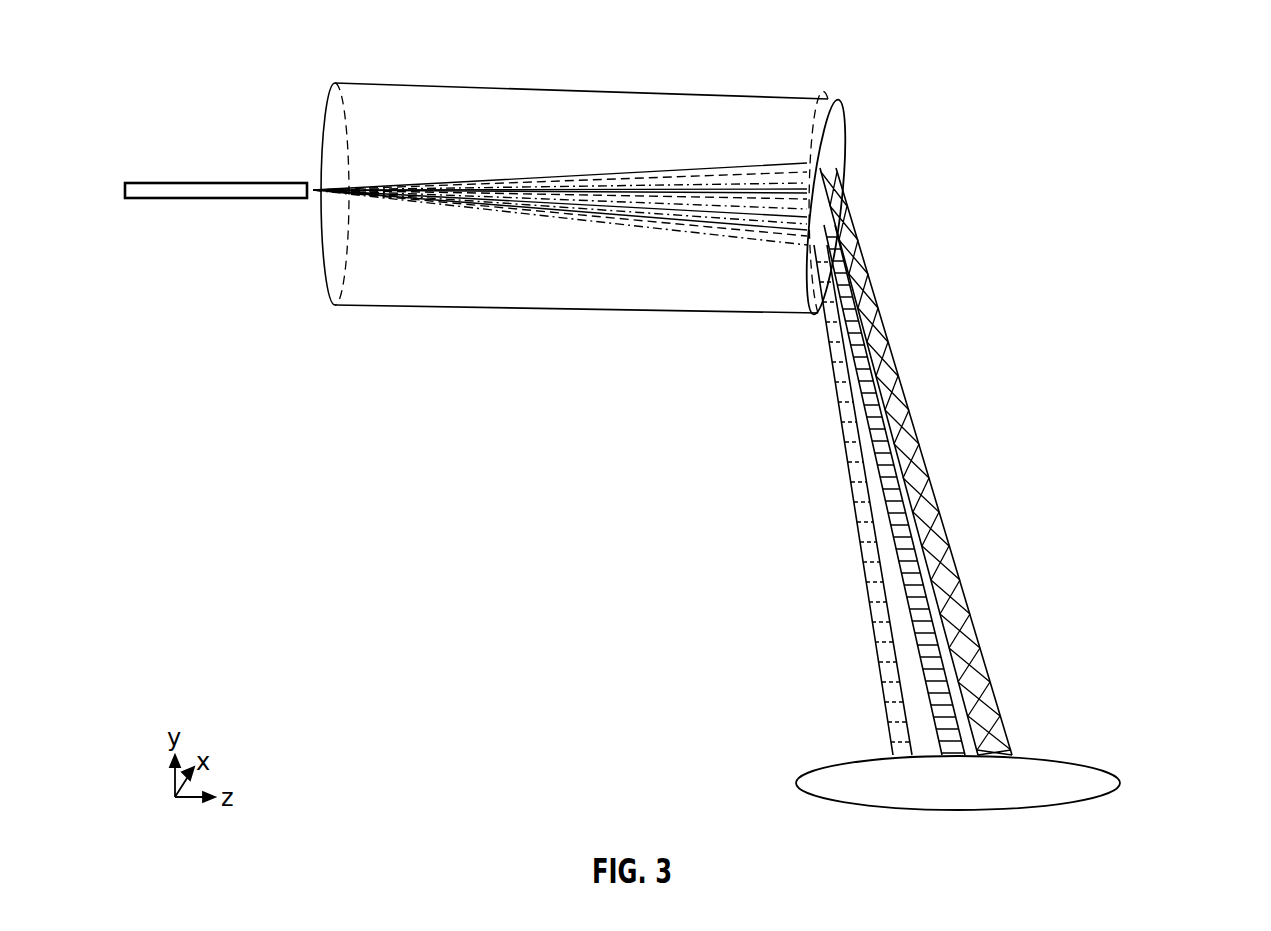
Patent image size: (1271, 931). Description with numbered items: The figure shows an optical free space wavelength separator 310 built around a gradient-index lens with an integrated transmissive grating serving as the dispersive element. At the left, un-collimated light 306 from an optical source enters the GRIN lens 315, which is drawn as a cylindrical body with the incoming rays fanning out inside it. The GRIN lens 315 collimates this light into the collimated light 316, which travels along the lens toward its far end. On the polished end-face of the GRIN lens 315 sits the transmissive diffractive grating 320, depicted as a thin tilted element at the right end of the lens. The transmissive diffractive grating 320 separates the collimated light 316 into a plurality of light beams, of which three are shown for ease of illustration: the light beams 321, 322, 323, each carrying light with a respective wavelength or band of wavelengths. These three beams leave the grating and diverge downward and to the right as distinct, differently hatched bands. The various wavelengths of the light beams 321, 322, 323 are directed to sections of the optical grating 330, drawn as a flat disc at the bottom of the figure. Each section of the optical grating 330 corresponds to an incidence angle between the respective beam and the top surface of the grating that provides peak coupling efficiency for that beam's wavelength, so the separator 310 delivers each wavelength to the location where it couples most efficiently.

The un-collimated light 306 is at (140, 183).
The optical free space wavelength separator 310 is at (1163, 47).
The gradient-index (GRIN) lens 315 is at (452, 105).
The collimated light 316 is at (580, 313).
The transmissive diffractive grating 320 is at (837, 162).
The light beam 321 is at (870, 602).
The light beam 322 is at (934, 632).
The light beam 323 is at (990, 680).
The optical grating 330 is at (1063, 804).